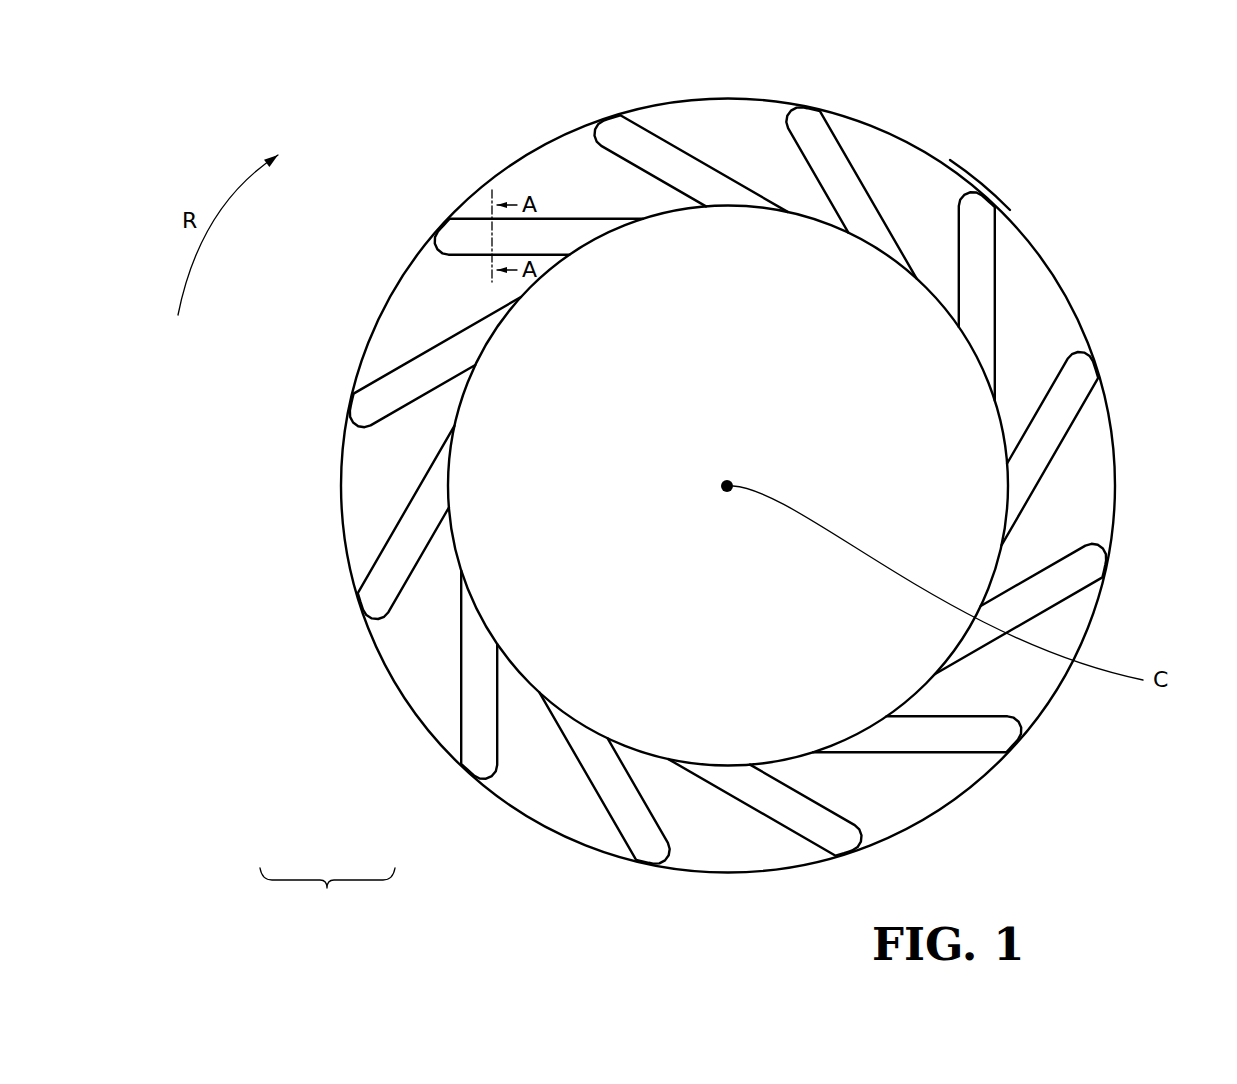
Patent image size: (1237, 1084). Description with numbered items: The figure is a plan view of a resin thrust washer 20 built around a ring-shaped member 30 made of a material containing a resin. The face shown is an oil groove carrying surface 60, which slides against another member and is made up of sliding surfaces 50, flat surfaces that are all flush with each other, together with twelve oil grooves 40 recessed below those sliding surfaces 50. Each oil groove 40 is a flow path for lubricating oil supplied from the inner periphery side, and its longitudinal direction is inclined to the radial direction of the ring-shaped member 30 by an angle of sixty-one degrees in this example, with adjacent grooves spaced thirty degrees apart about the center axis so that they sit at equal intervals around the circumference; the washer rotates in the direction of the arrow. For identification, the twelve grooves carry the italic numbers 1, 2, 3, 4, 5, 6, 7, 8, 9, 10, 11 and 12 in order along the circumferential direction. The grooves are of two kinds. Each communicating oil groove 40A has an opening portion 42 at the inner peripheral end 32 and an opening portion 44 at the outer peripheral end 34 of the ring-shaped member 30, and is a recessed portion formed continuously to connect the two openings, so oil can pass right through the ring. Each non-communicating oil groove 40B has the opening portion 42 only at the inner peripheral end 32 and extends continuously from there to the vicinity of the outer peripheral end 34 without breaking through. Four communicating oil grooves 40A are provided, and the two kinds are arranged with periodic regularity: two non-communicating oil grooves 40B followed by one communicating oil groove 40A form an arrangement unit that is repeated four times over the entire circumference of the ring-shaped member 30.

The resin thrust washer 20 is at (1132, 150).
The ring-shaped member 30 is at (1087, 508).
The inner peripheral end 32 is at (938, 307).
The outer peripheral end 34 is at (948, 165).
The oil grooves 40 is at (728, 473).
The communicating oil grooves 40A is at (414, 333).
The non-communicating oil grooves 40B is at (599, 148).
The opening portion 42 is at (585, 247).
The opening portion 44 is at (343, 422).
The sliding surfaces 50 is at (410, 670).
The oil groove carrying surface 60 is at (327, 895).
The oil groove 1 is at (690, 149).
The oil groove 2 is at (527, 231).
The oil groove 3 is at (422, 362).
The oil groove 4 is at (394, 529).
The oil groove 5 is at (477, 689).
The oil groove 6 is at (605, 799).
The oil groove 7 is at (768, 825).
The oil groove 8 is at (933, 736).
The oil groove 9 is at (1042, 607).
The oil groove 10 is at (1069, 442).
The oil groove 11 is at (986, 279).
The oil groove 12 is at (851, 175).